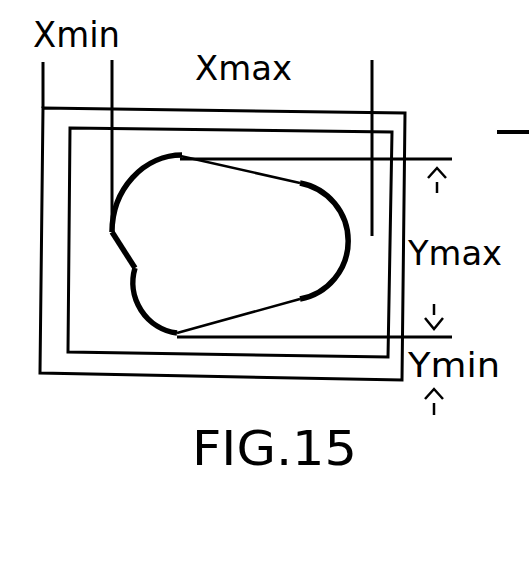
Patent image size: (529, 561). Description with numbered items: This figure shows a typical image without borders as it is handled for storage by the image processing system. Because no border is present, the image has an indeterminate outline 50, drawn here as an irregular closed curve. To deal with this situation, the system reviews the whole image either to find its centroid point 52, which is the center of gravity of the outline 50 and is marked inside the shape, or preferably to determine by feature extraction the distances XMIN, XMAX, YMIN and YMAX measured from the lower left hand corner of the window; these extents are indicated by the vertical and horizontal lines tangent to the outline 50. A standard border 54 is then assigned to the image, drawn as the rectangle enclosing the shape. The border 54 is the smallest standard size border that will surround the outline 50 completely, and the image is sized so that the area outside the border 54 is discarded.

The indeterminate outline 50 is at (112, 232).
The centroid point 52 is at (230, 244).
The border 54 is at (173, 357).